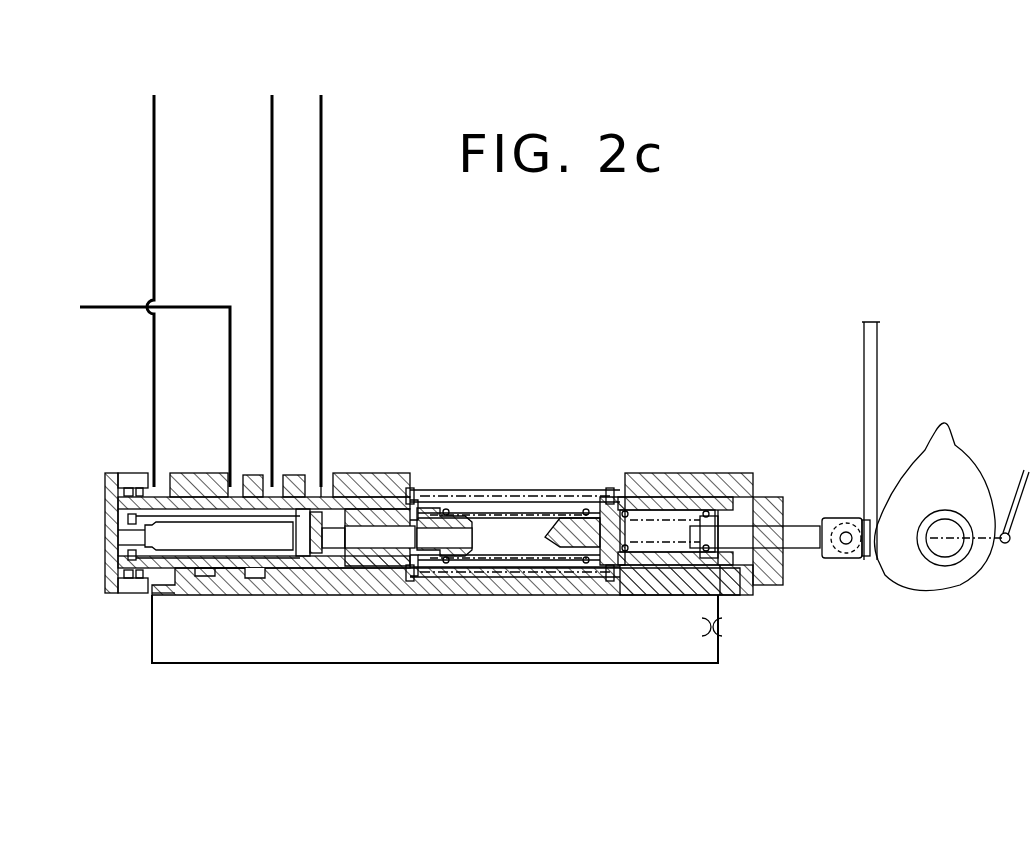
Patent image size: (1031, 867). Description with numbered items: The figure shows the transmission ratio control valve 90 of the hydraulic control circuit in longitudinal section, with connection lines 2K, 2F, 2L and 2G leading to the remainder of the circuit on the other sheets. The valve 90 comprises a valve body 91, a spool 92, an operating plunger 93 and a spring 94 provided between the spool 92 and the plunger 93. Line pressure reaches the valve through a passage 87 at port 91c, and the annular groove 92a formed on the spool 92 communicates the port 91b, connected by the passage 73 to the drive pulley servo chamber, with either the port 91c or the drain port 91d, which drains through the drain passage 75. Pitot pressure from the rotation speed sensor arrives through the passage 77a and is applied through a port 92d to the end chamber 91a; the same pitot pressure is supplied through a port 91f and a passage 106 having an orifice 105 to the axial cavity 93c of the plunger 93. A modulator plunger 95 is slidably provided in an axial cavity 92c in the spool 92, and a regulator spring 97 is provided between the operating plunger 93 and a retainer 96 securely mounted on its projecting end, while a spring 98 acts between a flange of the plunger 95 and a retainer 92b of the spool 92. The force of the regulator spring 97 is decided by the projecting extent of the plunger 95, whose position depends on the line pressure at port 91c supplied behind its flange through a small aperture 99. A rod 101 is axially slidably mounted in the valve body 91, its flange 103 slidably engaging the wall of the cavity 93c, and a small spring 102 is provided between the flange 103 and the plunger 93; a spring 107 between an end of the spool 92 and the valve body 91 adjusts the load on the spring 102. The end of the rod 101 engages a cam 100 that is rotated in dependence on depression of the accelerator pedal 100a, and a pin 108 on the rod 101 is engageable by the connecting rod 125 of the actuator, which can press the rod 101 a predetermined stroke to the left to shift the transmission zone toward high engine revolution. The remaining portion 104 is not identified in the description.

The connection line 2K is at (154, 274).
The connection line 2F is at (270, 274).
The connection line 2L is at (320, 274).
The connection line 2G is at (135, 391).
The passage 77a is at (156, 240).
The drain passage 75 is at (225, 292).
The passage 73 is at (274, 305).
The passage 87 is at (348, 292).
The spring 98 is at (108, 572).
The spring 107 is at (130, 598).
The end chamber 91a is at (130, 484).
The port 92d is at (128, 520).
The retainer 92b is at (130, 530).
The spool 92 is at (378, 585).
The axial cavity 92c is at (198, 580).
The port 91f is at (165, 598).
The drain port 91d is at (212, 495).
The port 91b is at (262, 495).
The annular groove 92a is at (286, 495).
The port 91c is at (322, 478).
The small aperture 99 is at (335, 490).
The valve body 91 is at (370, 490).
The modulator plunger 95 is at (272, 545).
The transmission ratio control valve 90 is at (552, 598).
The regulator spring 97 is at (568, 510).
The retainer 96 is at (450, 566).
The spring 94 is at (600, 500).
The operating plunger 93 is at (645, 488).
The axial cavity 93c is at (690, 510).
The small spring 102 is at (667, 531).
The flange 103 is at (760, 500).
The wall 104 is at (672, 580).
The rod 101 is at (794, 548).
The pin 108 is at (848, 498).
The connecting rod 125 is at (875, 372).
The cam 100 is at (940, 445).
The accelerator pedal 100a is at (1018, 490).
The orifice 105 is at (738, 620).
The passage 106 is at (430, 668).